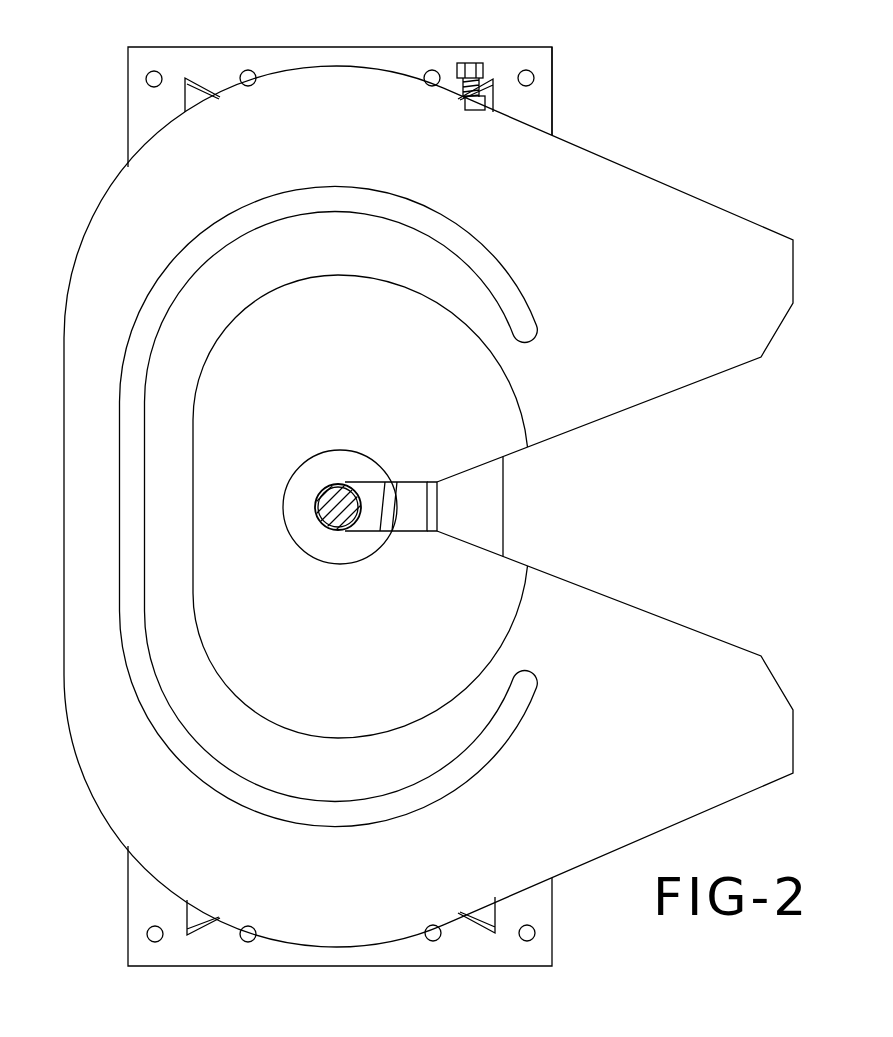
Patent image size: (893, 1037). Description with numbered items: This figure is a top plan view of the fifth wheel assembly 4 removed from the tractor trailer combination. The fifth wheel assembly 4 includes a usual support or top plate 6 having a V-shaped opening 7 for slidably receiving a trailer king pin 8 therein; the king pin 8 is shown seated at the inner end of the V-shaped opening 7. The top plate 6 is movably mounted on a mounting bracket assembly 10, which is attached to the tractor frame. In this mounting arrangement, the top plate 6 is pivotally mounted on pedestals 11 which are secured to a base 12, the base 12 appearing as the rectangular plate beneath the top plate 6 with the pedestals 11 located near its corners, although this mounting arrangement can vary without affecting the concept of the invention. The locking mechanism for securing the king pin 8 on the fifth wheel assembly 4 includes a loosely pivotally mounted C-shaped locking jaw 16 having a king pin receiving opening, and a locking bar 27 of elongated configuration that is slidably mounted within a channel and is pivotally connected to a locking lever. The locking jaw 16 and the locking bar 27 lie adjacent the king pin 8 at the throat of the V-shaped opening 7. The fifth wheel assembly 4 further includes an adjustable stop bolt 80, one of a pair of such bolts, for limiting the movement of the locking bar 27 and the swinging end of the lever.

The fifth wheel assembly 4 is at (428, 506).
The top plate 6 is at (428, 506).
The V-shaped opening 7 is at (623, 407).
The trailer king pin 8 is at (333, 488).
The mounting bracket assembly 10 is at (560, 75).
The pedestals 11 is at (193, 100).
The base 12 is at (230, 955).
The locking jaw 16 is at (366, 476).
The locking bar 27 is at (412, 476).
The adjustable stop bolt 80 is at (470, 66).